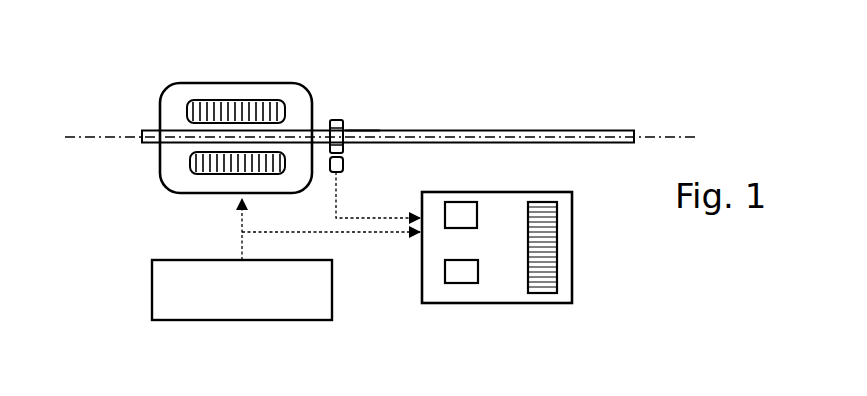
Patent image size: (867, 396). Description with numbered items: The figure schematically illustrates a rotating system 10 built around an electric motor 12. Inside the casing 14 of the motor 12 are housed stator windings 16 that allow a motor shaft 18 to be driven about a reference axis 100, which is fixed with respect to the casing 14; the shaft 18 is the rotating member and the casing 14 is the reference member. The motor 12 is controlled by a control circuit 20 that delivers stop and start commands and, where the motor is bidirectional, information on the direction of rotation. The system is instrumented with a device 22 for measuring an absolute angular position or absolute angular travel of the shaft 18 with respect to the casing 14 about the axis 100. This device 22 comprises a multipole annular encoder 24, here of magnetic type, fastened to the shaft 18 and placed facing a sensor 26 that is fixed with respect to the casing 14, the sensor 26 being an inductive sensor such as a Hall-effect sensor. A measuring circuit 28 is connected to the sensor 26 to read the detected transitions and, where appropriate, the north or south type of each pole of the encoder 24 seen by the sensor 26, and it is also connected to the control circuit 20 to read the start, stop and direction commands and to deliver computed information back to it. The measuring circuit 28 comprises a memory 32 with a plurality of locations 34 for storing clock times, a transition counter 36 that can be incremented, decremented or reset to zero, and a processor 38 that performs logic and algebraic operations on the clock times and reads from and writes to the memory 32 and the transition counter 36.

The rotating system 10 is at (468, 58).
The electric motor 12 is at (279, 82).
The casing 14 is at (225, 83).
The stator windings 16 is at (190, 166).
The motor shaft 18 is at (615, 130).
The control circuit 20 is at (173, 310).
The measuring device 22 is at (345, 120).
The multipole annular encoder 24 is at (362, 131).
The sensor 26 is at (345, 165).
The measuring circuit 28 is at (502, 295).
The memory 32 is at (562, 218).
The memory locations 34 is at (545, 285).
The transition counter 36 is at (463, 280).
The processor 38 is at (465, 207).
The reference axis 100 is at (110, 137).